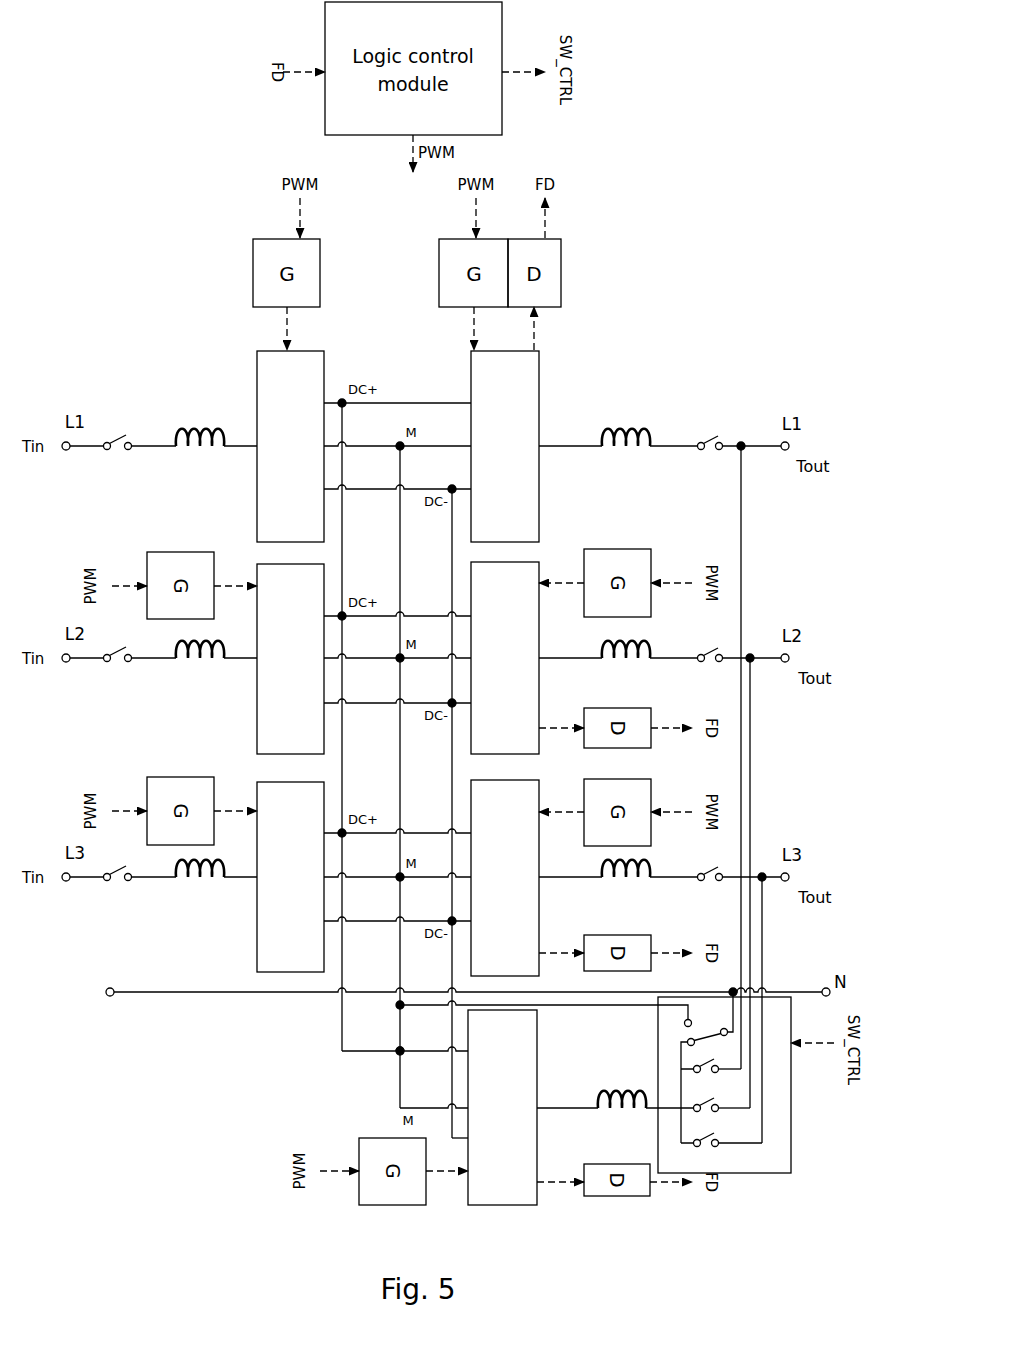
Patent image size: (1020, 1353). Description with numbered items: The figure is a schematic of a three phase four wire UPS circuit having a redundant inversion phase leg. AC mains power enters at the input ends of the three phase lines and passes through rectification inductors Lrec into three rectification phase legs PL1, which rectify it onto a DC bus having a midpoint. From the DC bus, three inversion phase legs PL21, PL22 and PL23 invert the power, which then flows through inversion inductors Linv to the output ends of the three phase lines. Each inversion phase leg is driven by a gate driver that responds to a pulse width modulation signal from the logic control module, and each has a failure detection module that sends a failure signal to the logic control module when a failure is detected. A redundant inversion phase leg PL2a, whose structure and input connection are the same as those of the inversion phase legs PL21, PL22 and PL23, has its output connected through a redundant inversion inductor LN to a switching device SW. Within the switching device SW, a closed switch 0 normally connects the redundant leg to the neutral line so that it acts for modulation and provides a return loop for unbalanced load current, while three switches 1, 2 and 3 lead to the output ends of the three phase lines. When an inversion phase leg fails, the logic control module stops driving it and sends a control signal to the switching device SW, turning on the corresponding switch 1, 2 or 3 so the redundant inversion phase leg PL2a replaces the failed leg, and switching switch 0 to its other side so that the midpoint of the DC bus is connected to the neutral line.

The rectification phase leg PL1 is at (290, 661).
The inversion phase leg PL21 is at (505, 446).
The inversion phase leg PL22 is at (505, 658).
The inversion phase leg PL23 is at (505, 878).
The redundant inversion phase leg PL2a is at (502, 1107).
The rectification inductor Lrec is at (216, 667).
The inversion inductor Linv is at (594, 667).
The redundant inversion inductor LN is at (615, 1089).
The switching device SW is at (724, 1084).
The switch 0 is at (711, 1021).
The switch 1 is at (718, 1059).
The switch 2 is at (722, 1098).
The switch 3 is at (728, 1134).